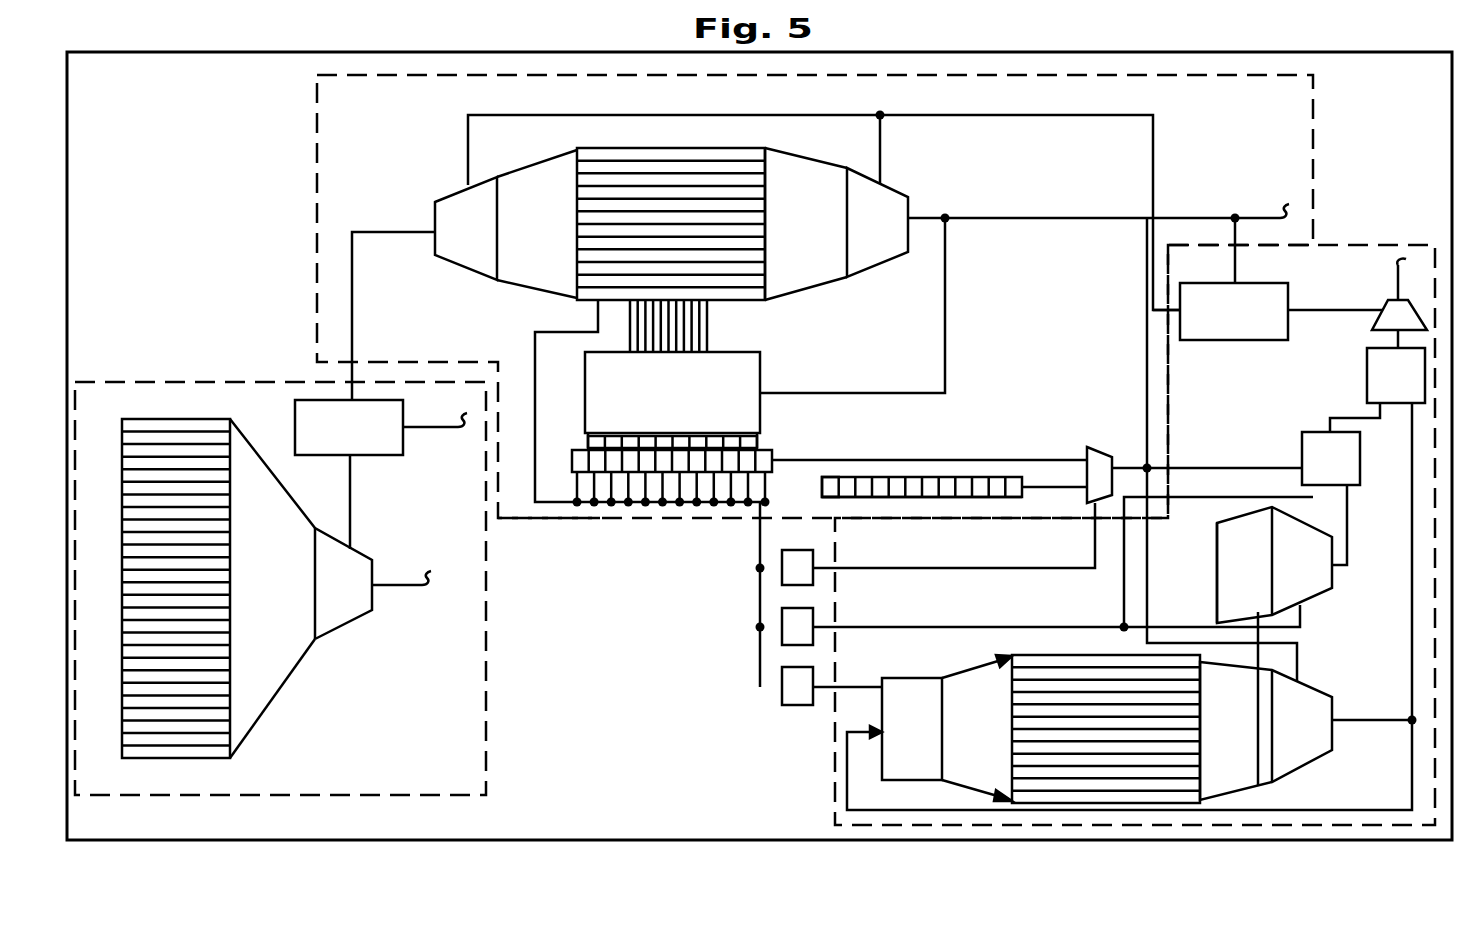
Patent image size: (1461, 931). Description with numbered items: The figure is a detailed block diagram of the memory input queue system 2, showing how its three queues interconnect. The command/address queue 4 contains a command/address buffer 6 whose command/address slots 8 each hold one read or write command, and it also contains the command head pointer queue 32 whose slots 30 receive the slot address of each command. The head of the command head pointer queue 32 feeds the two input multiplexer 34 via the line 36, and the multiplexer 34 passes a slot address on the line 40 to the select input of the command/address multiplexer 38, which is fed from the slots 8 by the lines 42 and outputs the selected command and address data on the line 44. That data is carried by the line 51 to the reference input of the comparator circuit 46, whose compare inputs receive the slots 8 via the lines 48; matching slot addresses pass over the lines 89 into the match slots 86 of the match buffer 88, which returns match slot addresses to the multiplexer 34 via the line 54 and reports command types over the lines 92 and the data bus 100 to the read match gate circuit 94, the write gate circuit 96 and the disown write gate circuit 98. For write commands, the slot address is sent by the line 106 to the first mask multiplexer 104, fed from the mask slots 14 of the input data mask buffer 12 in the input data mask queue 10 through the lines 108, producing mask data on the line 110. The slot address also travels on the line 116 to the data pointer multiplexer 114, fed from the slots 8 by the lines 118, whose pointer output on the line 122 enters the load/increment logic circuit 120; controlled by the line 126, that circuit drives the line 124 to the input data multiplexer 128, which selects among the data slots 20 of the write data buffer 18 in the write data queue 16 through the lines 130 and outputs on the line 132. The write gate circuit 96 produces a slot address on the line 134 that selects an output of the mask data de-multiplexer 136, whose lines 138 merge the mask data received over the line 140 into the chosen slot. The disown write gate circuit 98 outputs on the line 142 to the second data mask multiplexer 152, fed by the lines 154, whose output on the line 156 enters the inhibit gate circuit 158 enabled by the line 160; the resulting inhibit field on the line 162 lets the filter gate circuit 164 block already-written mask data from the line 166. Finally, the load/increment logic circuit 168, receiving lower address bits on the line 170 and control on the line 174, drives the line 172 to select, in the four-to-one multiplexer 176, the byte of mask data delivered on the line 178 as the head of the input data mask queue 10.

The memory input queue system 2 is at (170, 128).
The command/address queue 4 is at (952, 111).
The command/address buffer 6 is at (766, 149).
The command/address slots 8 is at (645, 152).
The input data mask queue 10 is at (1215, 484).
The input data mask buffer 12 is at (1012, 657).
The mask slots 14 is at (1063, 663).
The write data queue 16 is at (376, 750).
The write data buffer 18 is at (120, 470).
The data slots 20 is at (125, 598).
The slots of command head pointer queue 30 is at (833, 478).
The command head pointer queue 32 is at (910, 497).
The two input multiplexer 34 is at (1087, 455).
The line 36 is at (1068, 500).
The command/address multiplexer 38 is at (905, 336).
The line 40 is at (1147, 440).
The lines 42 is at (822, 163).
The line 44 is at (946, 216).
The comparator circuit 46 is at (535, 368).
The lines 48 is at (630, 335).
The line 51 is at (943, 283).
The line 54 is at (942, 477).
The match slots 86 is at (588, 442).
The match buffer 88 is at (570, 461).
The lines 89 is at (585, 438).
The lines 92 is at (560, 500).
The read match gate circuit 94 is at (782, 560).
The write gate circuit 96 is at (782, 690).
The disown write gate circuit 98 is at (782, 625).
The data bus 100 is at (548, 520).
The first mask multiplexer 104 is at (1340, 862).
The line 106 is at (1140, 643).
The lines 108 is at (1243, 790).
The line 110 is at (1412, 562).
The data pointer multiplexer 114 is at (435, 212).
The line 116 is at (468, 150).
The lines 118 is at (545, 163).
The load/increment logic circuit 120 is at (297, 402).
The line 122 is at (352, 280).
The line 124 is at (350, 507).
The line 126 is at (430, 427).
The input data multiplexer 128 is at (337, 622).
The lines 130 is at (257, 702).
The line 132 is at (395, 585).
The line 134 is at (880, 687).
The mask data de-multiplexer 136 is at (882, 712).
The lines 138 is at (960, 676).
The line 140 is at (1412, 762).
The line 142 is at (890, 627).
The second data mask multiplexer 152 is at (1345, 647).
The lines 154 is at (1217, 605).
The line 156 is at (1395, 506).
The inhibit gate circuit 158 is at (1302, 450).
The line 160 is at (1217, 523).
The line 162 is at (1350, 420).
The filter gate circuit 164 is at (1367, 380).
The line 166 is at (1392, 340).
The load/increment logic circuit 168 is at (1190, 305).
The line 170 is at (1235, 268).
The line 172 is at (1352, 310).
The line 174 is at (1160, 312).
The four-to-one multiplexer 176 is at (1427, 328).
The line 178 is at (1398, 268).